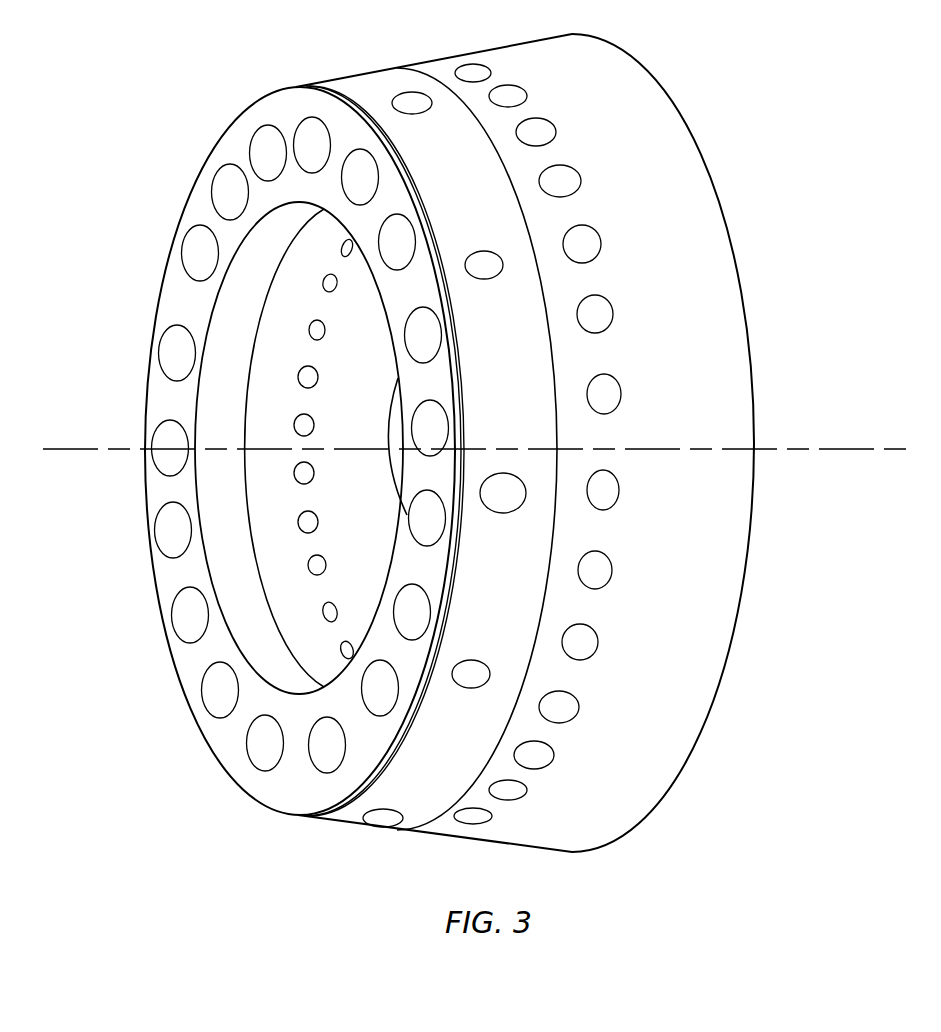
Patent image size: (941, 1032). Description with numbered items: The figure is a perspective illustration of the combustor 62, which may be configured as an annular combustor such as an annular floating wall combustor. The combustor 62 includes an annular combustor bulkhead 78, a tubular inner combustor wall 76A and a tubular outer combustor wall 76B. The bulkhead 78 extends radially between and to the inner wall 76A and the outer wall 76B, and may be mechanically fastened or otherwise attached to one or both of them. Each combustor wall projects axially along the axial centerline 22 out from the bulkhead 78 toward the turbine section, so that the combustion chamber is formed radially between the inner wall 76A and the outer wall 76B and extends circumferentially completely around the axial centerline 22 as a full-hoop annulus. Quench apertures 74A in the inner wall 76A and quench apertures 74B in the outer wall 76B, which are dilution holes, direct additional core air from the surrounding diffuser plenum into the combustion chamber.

The axial centerline 22 is at (891, 438).
The combustor 62 is at (463, 433).
The quench apertures 74A is at (351, 643).
The quench apertures 74B is at (619, 495).
The inner combustor wall 76A is at (278, 451).
The outer combustor wall 76B is at (592, 443).
The combustor bulkhead 78 is at (264, 786).